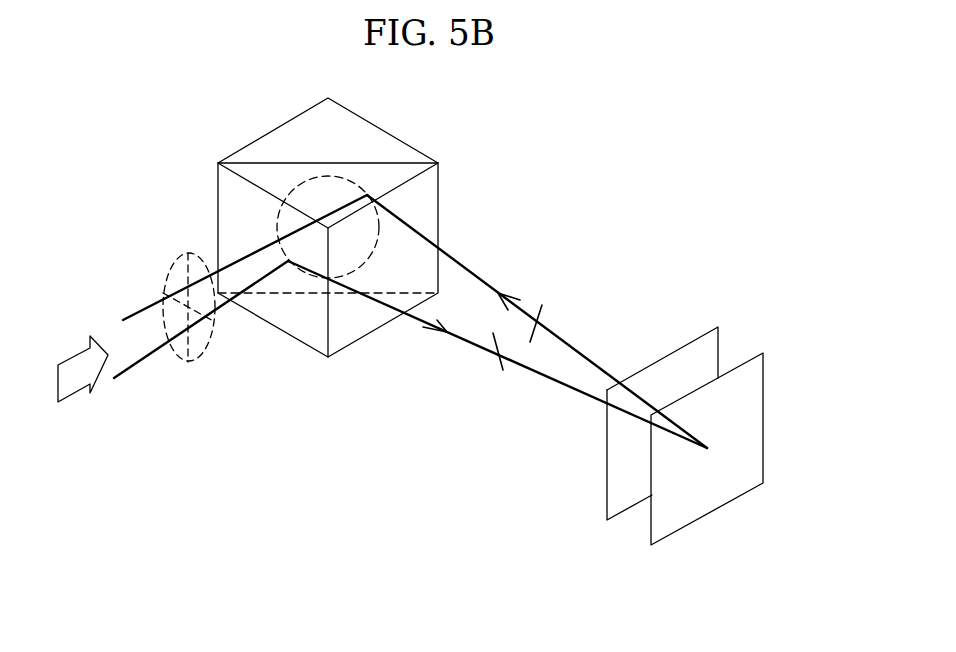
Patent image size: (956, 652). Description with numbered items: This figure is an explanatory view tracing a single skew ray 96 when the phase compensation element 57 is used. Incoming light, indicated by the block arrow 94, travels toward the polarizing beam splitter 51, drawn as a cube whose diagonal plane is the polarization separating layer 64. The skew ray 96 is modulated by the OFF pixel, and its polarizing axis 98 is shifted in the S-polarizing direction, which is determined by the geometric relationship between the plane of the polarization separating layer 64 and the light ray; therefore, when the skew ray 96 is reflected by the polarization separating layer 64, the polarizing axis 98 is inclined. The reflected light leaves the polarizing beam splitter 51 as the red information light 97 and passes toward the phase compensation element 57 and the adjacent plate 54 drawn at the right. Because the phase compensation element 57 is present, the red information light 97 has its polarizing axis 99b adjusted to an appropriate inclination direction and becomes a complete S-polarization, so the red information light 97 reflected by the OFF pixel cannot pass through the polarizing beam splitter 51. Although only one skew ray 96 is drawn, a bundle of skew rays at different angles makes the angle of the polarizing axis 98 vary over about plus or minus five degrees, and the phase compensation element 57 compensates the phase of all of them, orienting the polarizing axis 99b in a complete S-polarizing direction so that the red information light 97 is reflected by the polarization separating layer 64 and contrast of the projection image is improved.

The polarizing beam splitter 51 is at (192, 188).
The polarization separating layer 64 is at (397, 163).
The skew ray 96 is at (140, 362).
The incident light 94 is at (73, 395).
The red information light 97 is at (577, 348).
The polarizing axis of skew ray 98 is at (505, 373).
The polarizing axis of red information light 99b is at (543, 307).
The phase compensation element 57 is at (607, 487).
The front plate / detector 54 is at (737, 363).